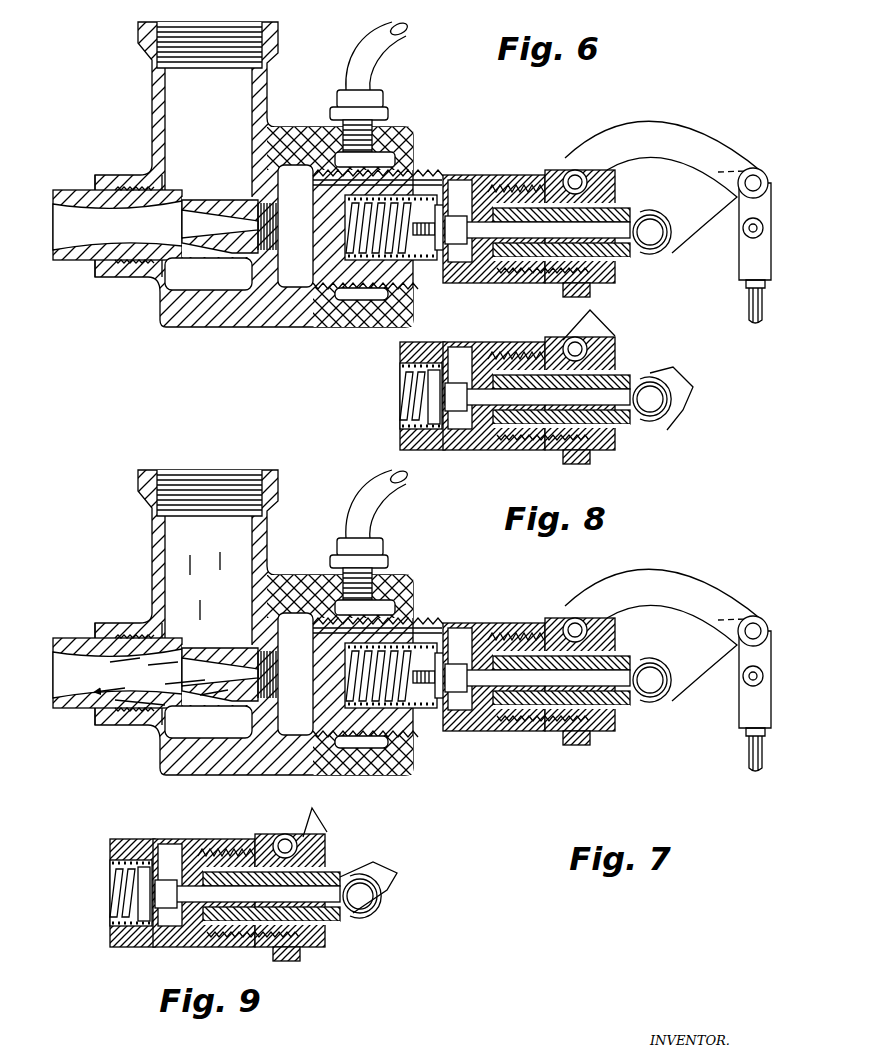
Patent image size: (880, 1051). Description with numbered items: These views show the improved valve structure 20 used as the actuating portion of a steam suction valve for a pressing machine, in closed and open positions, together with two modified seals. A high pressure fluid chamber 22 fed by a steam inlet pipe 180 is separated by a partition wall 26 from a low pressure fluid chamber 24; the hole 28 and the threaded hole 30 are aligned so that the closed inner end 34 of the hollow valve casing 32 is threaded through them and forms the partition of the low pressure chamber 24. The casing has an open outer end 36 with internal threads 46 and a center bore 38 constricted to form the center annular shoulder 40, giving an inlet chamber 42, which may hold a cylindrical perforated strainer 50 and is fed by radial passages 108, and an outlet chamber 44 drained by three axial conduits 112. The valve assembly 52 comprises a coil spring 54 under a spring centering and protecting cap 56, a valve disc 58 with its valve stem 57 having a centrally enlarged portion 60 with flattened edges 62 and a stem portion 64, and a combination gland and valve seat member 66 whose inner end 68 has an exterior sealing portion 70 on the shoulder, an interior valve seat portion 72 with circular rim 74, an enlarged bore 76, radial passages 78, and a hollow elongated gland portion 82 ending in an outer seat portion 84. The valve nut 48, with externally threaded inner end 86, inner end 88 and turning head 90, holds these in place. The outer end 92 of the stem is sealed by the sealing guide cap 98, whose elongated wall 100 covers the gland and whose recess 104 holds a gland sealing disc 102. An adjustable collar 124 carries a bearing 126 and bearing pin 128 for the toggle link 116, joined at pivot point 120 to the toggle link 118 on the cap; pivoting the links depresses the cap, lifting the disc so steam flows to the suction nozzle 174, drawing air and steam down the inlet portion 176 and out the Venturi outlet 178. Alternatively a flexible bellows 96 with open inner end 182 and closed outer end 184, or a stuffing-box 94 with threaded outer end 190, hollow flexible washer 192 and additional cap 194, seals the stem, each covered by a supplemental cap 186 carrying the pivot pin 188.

In FIG. 6, the valve structure 20 is at (522, 142).
In FIG. 7, the valve structure 20 is at (490, 572).
In FIG. 6, the high pressure fluid chamber 22 is at (432, 138).
In FIG. 7, the high pressure fluid chamber 22 is at (430, 588).
In FIG. 6, the low pressure fluid chamber 24 is at (292, 165).
In FIG. 7, the low pressure fluid chamber 24 is at (290, 612).
In FIG. 6, the partition wall 26 is at (325, 326).
In FIG. 7, the partition wall 26 is at (322, 774).
In FIG. 6, the hole 28 is at (442, 182).
In FIG. 7, the hole 28 is at (438, 630).
In FIG. 6, the threaded hole 30 is at (336, 175).
In FIG. 7, the threaded hole 30 is at (337, 620).
In FIG. 6, the hollow valve casing 32 is at (528, 186).
In FIG. 7, the hollow valve casing 32 is at (530, 634).
In FIG. 8, the hollow valve casing 32 is at (412, 445).
In FIG. 9, the hollow valve casing 32 is at (150, 850).
In FIG. 6, the closed inner end 34 is at (340, 236).
In FIG. 7, the closed inner end 34 is at (340, 684).
In FIG. 6, the open outer end 36 is at (588, 168).
In FIG. 7, the open outer end 36 is at (580, 615).
In FIG. 6, the center bore 38 is at (392, 130).
In FIG. 7, the center bore 38 is at (380, 585).
In FIG. 8, the center bore 38 is at (408, 367).
In FIG. 9, the center bore 38 is at (135, 838).
In FIG. 6, the center annular shoulder 40 is at (445, 263).
In FIG. 7, the center annular shoulder 40 is at (440, 712).
In FIG. 8, the center annular shoulder 40 is at (420, 450).
In FIG. 9, the center annular shoulder 40 is at (135, 935).
In FIG. 7, the inlet chamber 42 is at (350, 710).
In FIG. 8, the inlet chamber 42 is at (405, 395).
In FIG. 9, the inlet chamber 42 is at (110, 896).
In FIG. 6, the outlet chamber 44 is at (510, 282).
In FIG. 7, the outlet chamber 44 is at (505, 728).
In FIG. 6, the internal threads 46 is at (578, 172).
In FIG. 7, the internal threads 46 is at (580, 620).
In FIG. 8, the internal threads 46 is at (512, 450).
In FIG. 9, the internal threads 46 is at (212, 942).
In FIG. 6, the valve nut 48 is at (600, 291).
In FIG. 7, the valve nut 48 is at (600, 738).
In FIG. 8, the valve nut 48 is at (610, 460).
In FIG. 9, the valve nut 48 is at (310, 842).
In FIG. 6, the cylindrical perforated strainer 50 is at (345, 260).
In FIG. 7, the cylindrical perforated strainer 50 is at (345, 708).
In FIG. 8, the cylindrical perforated strainer 50 is at (400, 425).
In FIG. 9, the cylindrical perforated strainer 50 is at (112, 905).
In FIG. 6, the valve assembly 52 is at (540, 291).
In FIG. 7, the valve assembly 52 is at (548, 740).
In FIG. 8, the valve assembly 52 is at (540, 452).
In FIG. 9, the valve assembly 52 is at (305, 958).
In FIG. 6, the coil spring 54 is at (338, 190).
In FIG. 7, the coil spring 54 is at (338, 638).
In FIG. 8, the coil spring 54 is at (402, 410).
In FIG. 9, the coil spring 54 is at (112, 880).
In FIG. 6, the spring centering and protecting cap 56 is at (345, 212).
In FIG. 7, the spring centering and protecting cap 56 is at (345, 660).
In FIG. 6, the valve stem 57 is at (560, 292).
In FIG. 7, the valve stem 57 is at (570, 735).
In FIG. 8, the valve stem 57 is at (590, 455).
In FIG. 9, the valve stem 57 is at (258, 840).
In FIG. 6, the valve disc 58 is at (445, 186).
In FIG. 7, the valve disc 58 is at (445, 634).
In FIG. 8, the valve disc 58 is at (404, 372).
In FIG. 9, the valve disc 58 is at (110, 867).
In FIG. 6, the centrally enlarged portion 60 is at (482, 264).
In FIG. 7, the centrally enlarged portion 60 is at (478, 712).
In FIG. 8, the centrally enlarged portion 60 is at (400, 435).
In FIG. 9, the centrally enlarged portion 60 is at (175, 940).
In FIG. 6, the flattened edges 62 is at (470, 278).
In FIG. 7, the flattened edges 62 is at (470, 725).
In FIG. 8, the flattened edges 62 is at (468, 370).
In FIG. 9, the flattened edges 62 is at (180, 840).
In FIG. 6, the stem portion 64 is at (662, 234).
In FIG. 7, the stem portion 64 is at (660, 680).
In FIG. 8, the stem portion 64 is at (668, 396).
In FIG. 9, the stem portion 64 is at (330, 850).
In FIG. 6, the combination gland and valve seat member 66 is at (616, 270).
In FIG. 7, the combination gland and valve seat member 66 is at (616, 716).
In FIG. 8, the combination gland and valve seat member 66 is at (490, 440).
In FIG. 9, the combination gland and valve seat member 66 is at (125, 936).
In FIG. 6, the valve seat inner end 68 is at (452, 262).
In FIG. 7, the valve seat inner end 68 is at (488, 720).
In FIG. 8, the valve seat inner end 68 is at (432, 360).
In FIG. 9, the valve seat inner end 68 is at (145, 855).
In FIG. 6, the exterior sealing portion 70 is at (452, 268).
In FIG. 7, the exterior sealing portion 70 is at (448, 716).
In FIG. 9, the exterior sealing portion 70 is at (155, 940).
In FIG. 7, the interior valve seat portion 72 is at (404, 770).
In FIG. 8, the interior valve seat portion 72 is at (415, 360).
In FIG. 9, the interior valve seat portion 72 is at (118, 930).
In FIG. 6, the circular rim 74 is at (460, 202).
In FIG. 7, the circular rim 74 is at (462, 650).
In FIG. 6, the enlarged bore 76 is at (468, 168).
In FIG. 7, the enlarged bore 76 is at (468, 620).
In FIG. 9, the enlarged bore 76 is at (228, 845).
In FIG. 6, the radial passages 78 is at (487, 202).
In FIG. 7, the radial passages 78 is at (485, 650).
In FIG. 9, the radial passages 78 is at (215, 848).
In FIG. 6, the hollow elongated gland portion 82 is at (526, 281).
In FIG. 7, the hollow elongated gland portion 82 is at (540, 728).
In FIG. 6, the outer seat portion 84 is at (662, 250).
In FIG. 7, the outer seat portion 84 is at (660, 698).
In FIG. 6, the externally threaded inner end 86 is at (560, 162).
In FIG. 7, the externally threaded inner end 86 is at (556, 612).
In FIG. 6, the inner end of valve nut 88 is at (535, 172).
In FIG. 7, the inner end of valve nut 88 is at (530, 620).
In FIG. 8, the inner end of valve nut 88 is at (470, 452).
In FIG. 6, the turning head 90 is at (604, 288).
In FIG. 7, the turning head 90 is at (604, 736).
In FIG. 8, the turning head 90 is at (605, 452).
In FIG. 6, the outer end of valve stem 92 is at (664, 226).
In FIG. 7, the outer end of valve stem 92 is at (664, 672).
In FIG. 8, the outer end of valve stem 92 is at (668, 382).
In FIG. 9, the outer end of valve stem 92 is at (350, 866).
In FIG. 9, the stuffing-box 94 is at (298, 942).
In FIG. 8, the flexible bellows 96 is at (600, 460).
In FIG. 6, the sealing guide cap 98 is at (660, 196).
In FIG. 7, the sealing guide cap 98 is at (638, 650).
In FIG. 6, the elongated wall 100 is at (628, 186).
In FIG. 7, the elongated wall 100 is at (612, 632).
In FIG. 6, the gland sealing disc 102 is at (664, 214).
In FIG. 7, the gland sealing disc 102 is at (668, 660).
In FIG. 6, the recess 104 is at (620, 200).
In FIG. 7, the recess 104 is at (622, 648).
In FIG. 7, the radial passages 108 is at (345, 740).
In FIG. 8, the radial passages 108 is at (400, 366).
In FIG. 6, the axial conduits 112 is at (264, 160).
In FIG. 7, the axial conduits 112 is at (262, 620).
In FIG. 9, the axial conduits 112 is at (108, 845).
In FIG. 6, the toggle link 116 is at (658, 126).
In FIG. 7, the toggle link 116 is at (700, 585).
In FIG. 8, the toggle link 116 is at (694, 386).
In FIG. 9, the toggle link 116 is at (312, 830).
In FIG. 6, the toggle link 118 is at (705, 224).
In FIG. 7, the toggle link 118 is at (700, 668).
In FIG. 9, the toggle link 118 is at (395, 878).
In FIG. 6, the pivot point 120 is at (757, 168).
In FIG. 7, the pivot point 120 is at (756, 616).
In FIG. 6, the adjustable collar 124 is at (610, 295).
In FIG. 7, the adjustable collar 124 is at (570, 745).
In FIG. 8, the adjustable collar 124 is at (565, 455).
In FIG. 9, the adjustable collar 124 is at (290, 960).
In FIG. 6, the bearing 126 is at (602, 170).
In FIG. 7, the bearing 126 is at (600, 615).
In FIG. 6, the bearing pin 128 is at (606, 177).
In FIG. 7, the bearing pin 128 is at (605, 622).
In FIG. 6, the suction nozzle 174 is at (216, 247).
In FIG. 7, the suction nozzle 174 is at (216, 695).
In FIG. 6, the inlet portion 176 is at (242, 82).
In FIG. 7, the inlet portion 176 is at (165, 535).
In FIG. 6, the outlet 178 is at (92, 188).
In FIG. 7, the outlet 178 is at (110, 640).
In FIG. 6, the steam inlet pipe 180 is at (378, 80).
In FIG. 7, the steam inlet pipe 180 is at (355, 515).
In FIG. 8, the open inner end of bellows 182 is at (448, 450).
In FIG. 8, the closed outer end of bellows 184 is at (650, 380).
In FIG. 8, the supplemental cap 186 is at (640, 372).
In FIG. 9, the supplemental cap 186 is at (340, 860).
In FIG. 8, the pivot pin 188 is at (670, 412).
In FIG. 9, the threaded outer end of gland 190 is at (245, 942).
In FIG. 9, the hollow flexible washer 192 is at (285, 950).
In FIG. 9, the additional cap 194 is at (352, 905).